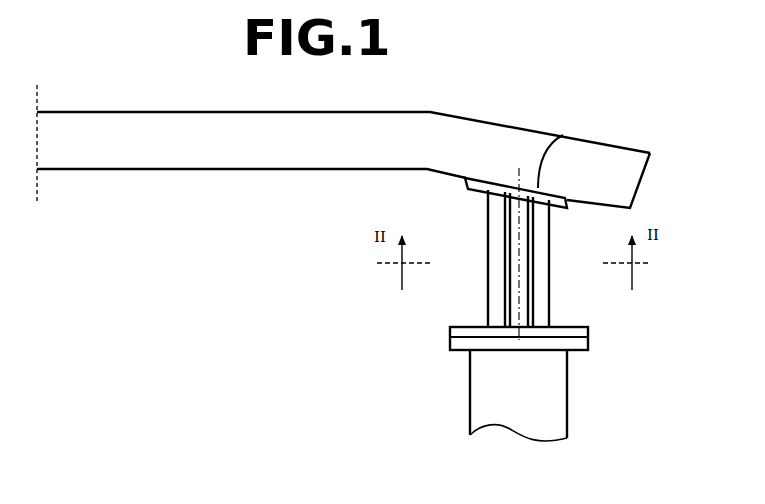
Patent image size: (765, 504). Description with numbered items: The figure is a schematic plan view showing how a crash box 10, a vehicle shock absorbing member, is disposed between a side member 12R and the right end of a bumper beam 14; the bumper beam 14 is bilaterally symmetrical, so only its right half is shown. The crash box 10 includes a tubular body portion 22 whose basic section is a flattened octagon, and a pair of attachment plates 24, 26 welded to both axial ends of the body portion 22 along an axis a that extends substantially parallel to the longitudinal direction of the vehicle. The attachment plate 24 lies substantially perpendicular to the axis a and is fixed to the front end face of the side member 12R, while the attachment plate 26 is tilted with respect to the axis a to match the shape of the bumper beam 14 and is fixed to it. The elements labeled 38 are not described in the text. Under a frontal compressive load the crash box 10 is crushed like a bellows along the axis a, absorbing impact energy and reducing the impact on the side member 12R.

The crash box 10 is at (428, 320).
The side member 12R is at (550, 393).
The bumper beam 14 is at (133, 152).
The body portion 22 is at (470, 241).
The attachment plate 24 is at (572, 329).
The attachment plate 26 is at (563, 135).
The bolt 38 is at (497, 288).
The axis a is at (518, 243).